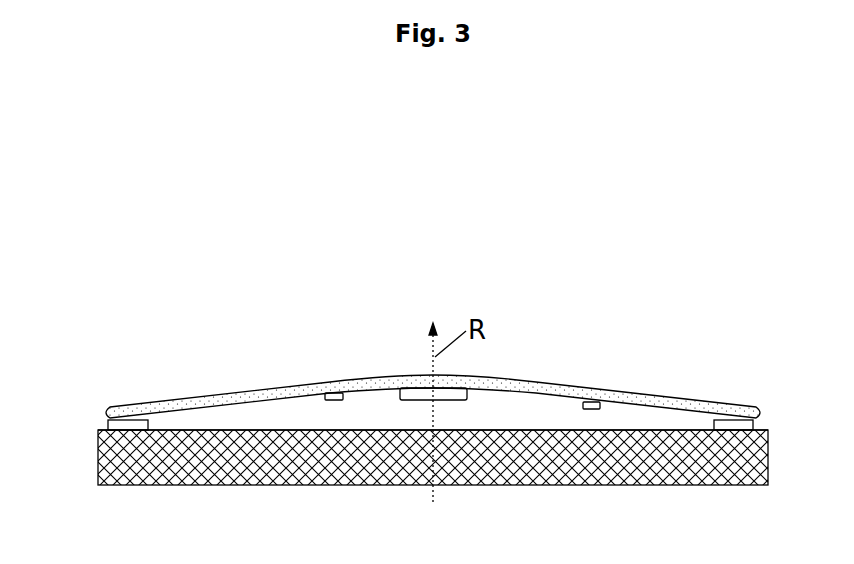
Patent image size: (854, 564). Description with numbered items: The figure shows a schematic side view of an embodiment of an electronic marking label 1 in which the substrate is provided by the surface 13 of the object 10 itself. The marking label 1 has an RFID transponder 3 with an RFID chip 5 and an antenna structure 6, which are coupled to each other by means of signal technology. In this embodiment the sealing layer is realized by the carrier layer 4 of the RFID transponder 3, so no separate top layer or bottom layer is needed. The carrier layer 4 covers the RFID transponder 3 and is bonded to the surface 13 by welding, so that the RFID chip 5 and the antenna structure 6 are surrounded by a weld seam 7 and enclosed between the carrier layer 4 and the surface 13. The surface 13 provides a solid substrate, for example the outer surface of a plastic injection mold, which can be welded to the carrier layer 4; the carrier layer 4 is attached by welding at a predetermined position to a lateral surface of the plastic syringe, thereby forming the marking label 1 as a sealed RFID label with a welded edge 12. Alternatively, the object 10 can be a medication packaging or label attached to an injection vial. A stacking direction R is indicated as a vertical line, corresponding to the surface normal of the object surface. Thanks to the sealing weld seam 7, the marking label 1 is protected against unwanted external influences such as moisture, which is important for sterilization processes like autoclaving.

The marking label 1 is at (93, 266).
The RFID transponder 3 is at (538, 338).
The carrier layer 4 is at (200, 406).
The RFID chip 5 is at (413, 392).
The antenna structure 6 is at (333, 393).
The weld seam 7 is at (123, 422).
The object 10 is at (313, 463).
The welded edge 12 is at (758, 373).
The surface 13 is at (264, 426).